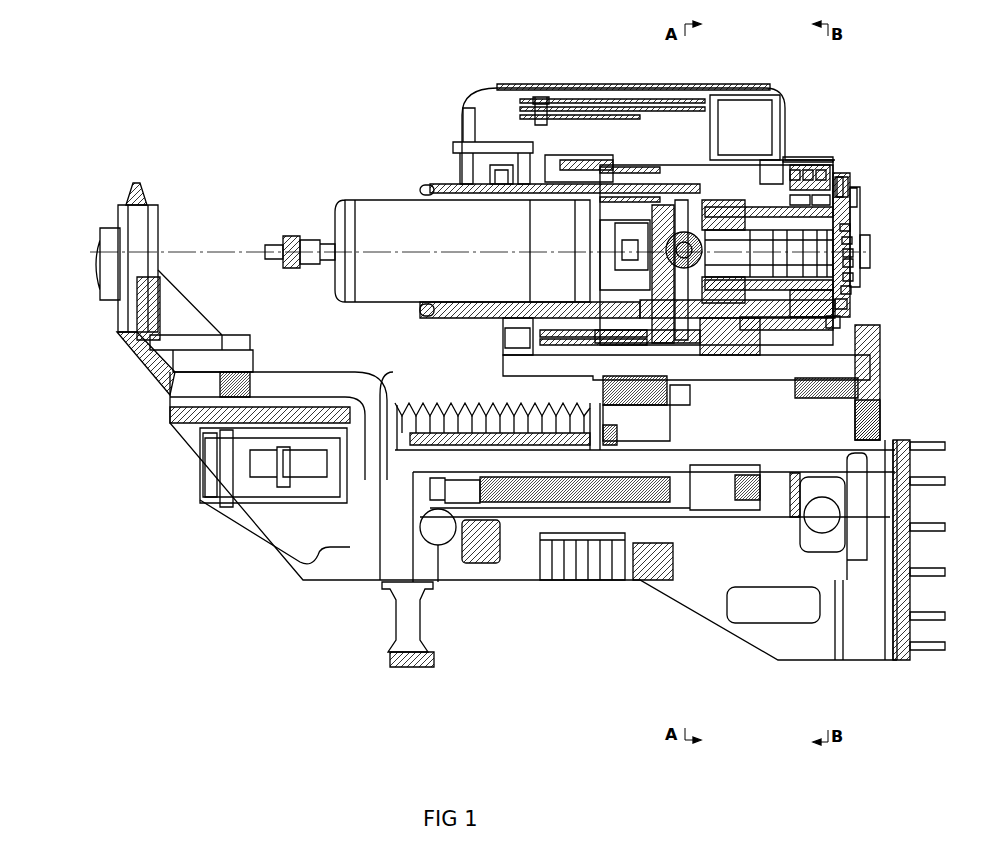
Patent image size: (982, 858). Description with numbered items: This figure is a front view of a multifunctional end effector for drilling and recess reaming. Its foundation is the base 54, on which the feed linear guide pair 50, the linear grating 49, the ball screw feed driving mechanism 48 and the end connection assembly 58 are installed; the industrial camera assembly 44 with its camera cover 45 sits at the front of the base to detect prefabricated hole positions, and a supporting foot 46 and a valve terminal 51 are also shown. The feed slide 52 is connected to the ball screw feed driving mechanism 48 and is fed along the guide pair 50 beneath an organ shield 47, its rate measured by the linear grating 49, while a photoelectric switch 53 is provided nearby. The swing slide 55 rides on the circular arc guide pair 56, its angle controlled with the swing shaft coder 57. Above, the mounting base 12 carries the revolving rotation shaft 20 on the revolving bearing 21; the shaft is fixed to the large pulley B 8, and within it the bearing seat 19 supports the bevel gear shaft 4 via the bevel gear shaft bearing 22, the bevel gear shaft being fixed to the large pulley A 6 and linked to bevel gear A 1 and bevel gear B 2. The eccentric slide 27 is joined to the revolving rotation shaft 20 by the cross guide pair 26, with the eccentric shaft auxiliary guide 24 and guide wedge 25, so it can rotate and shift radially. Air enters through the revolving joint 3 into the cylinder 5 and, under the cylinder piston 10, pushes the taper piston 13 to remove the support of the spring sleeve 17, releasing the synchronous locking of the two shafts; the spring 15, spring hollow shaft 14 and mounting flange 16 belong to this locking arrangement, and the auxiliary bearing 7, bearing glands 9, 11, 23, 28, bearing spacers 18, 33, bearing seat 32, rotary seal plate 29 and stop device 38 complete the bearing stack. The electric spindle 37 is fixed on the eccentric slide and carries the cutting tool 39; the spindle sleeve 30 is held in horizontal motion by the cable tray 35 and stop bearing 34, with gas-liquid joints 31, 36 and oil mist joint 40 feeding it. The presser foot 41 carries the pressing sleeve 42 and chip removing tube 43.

The bevel gear A 1 is at (845, 227).
The bevel gear B 2 is at (847, 240).
The revolving joint 3 is at (848, 253).
The bevel gear shaft 4 is at (848, 263).
The cylinder 5 is at (848, 277).
The large pulley A 6 is at (846, 290).
The auxiliary bearing 7 is at (840, 303).
The large pulley B 8 is at (833, 320).
The bearing gland A 9 is at (812, 190).
The cylinder piston 10 is at (805, 185).
The bearing gland B 11 is at (798, 180).
The mounting base 12 is at (792, 175).
The taper piston 13 is at (788, 170).
The spring hollow shaft 14 is at (784, 165).
The spring 15 is at (782, 160).
The mounting flange 16 is at (780, 150).
The spring sleeve 17 is at (768, 150).
The bearing spacer A 18 is at (755, 150).
The bearing seat 19 is at (740, 150).
The revolving rotation shaft 20 is at (752, 230).
The revolving bearing 21 is at (748, 200).
The bevel gear shaft bearing 22 is at (740, 170).
The bearing gland 23 is at (730, 180).
The eccentric shaft auxiliary guide 24 is at (745, 250).
The guide wedge 25 is at (720, 240).
The cross guide pair 26 is at (690, 200).
The eccentric slide 27 is at (660, 220).
The bearing gland 28 is at (640, 230).
The rotary seal plate 29 is at (620, 200).
The spindle sleeve 30 is at (600, 185).
The gas-liquid joint A 31 is at (560, 180).
The bearing seat 32 is at (540, 180).
The bearing spacer B 33 is at (510, 190).
The stop bearing 34 is at (480, 150).
The cable tray 35 is at (460, 175).
The gas-liquid joint B 36 is at (440, 195).
The electric spindle 37 is at (527, 233).
The stop device 38 is at (487, 307).
The cutting tool 39 is at (265, 248).
The oil mist joint 40 is at (137, 195).
The presser foot 41 is at (118, 215).
The pressing sleeve 42 is at (108, 232).
The chip removing tube 43 is at (128, 300).
The industrial camera assembly 44 is at (260, 477).
The camera cover 45 is at (205, 468).
The supporting foot 46 is at (405, 590).
The organ shield 47 is at (460, 560).
The ball screw feed driving mechanism 48 is at (505, 520).
The linear grating 49 is at (540, 500).
The feed linear guide pair 50 is at (560, 470).
The valve terminal 51 is at (595, 450).
The feed slide 52 is at (640, 420).
The photoelectric switch 53 is at (660, 410).
The base 54 is at (700, 400).
The swing slide 55 is at (730, 410).
The circular arc guide pair 56 is at (770, 430).
The swing shaft coder 57 is at (810, 410).
The end connection assembly 58 is at (840, 400).